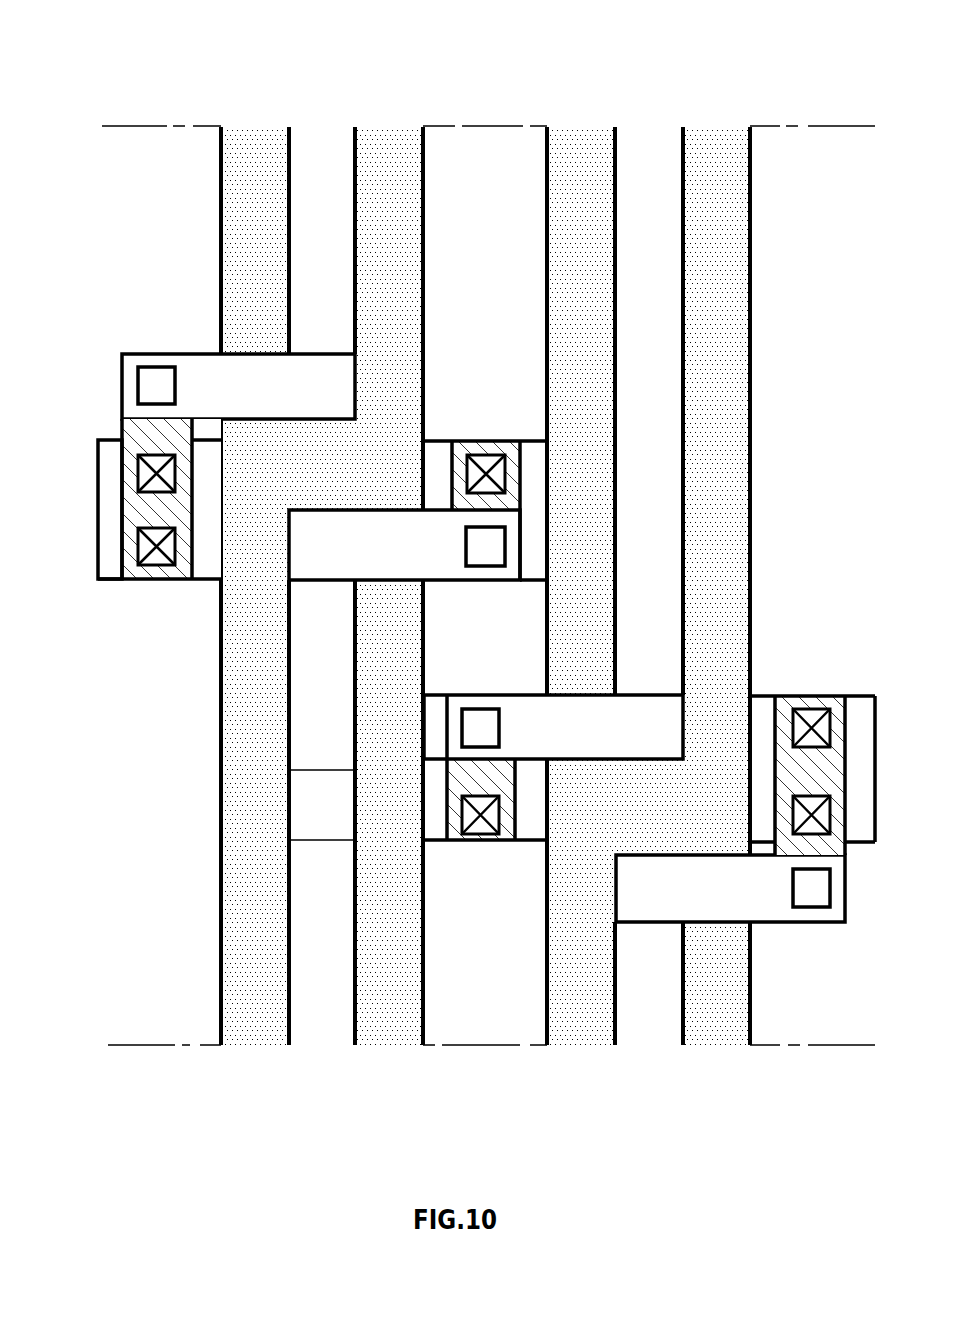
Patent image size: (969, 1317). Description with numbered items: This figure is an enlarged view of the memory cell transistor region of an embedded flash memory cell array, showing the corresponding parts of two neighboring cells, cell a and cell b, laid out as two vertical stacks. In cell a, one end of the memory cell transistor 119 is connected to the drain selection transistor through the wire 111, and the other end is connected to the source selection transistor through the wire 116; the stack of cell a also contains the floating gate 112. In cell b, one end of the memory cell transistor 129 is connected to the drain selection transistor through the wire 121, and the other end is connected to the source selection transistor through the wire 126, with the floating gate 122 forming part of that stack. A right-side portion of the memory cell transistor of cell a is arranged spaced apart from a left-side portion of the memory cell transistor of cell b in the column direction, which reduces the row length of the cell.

The wire 111 is at (326, 143).
The floating gate 112 is at (256, 147).
The wire 116 is at (333, 1028).
The memory cell transistor 119 is at (485, 453).
The wire 121 is at (647, 142).
The floating gate 122 is at (573, 143).
The wire 126 is at (642, 1030).
The memory cell transistor 129 is at (485, 833).